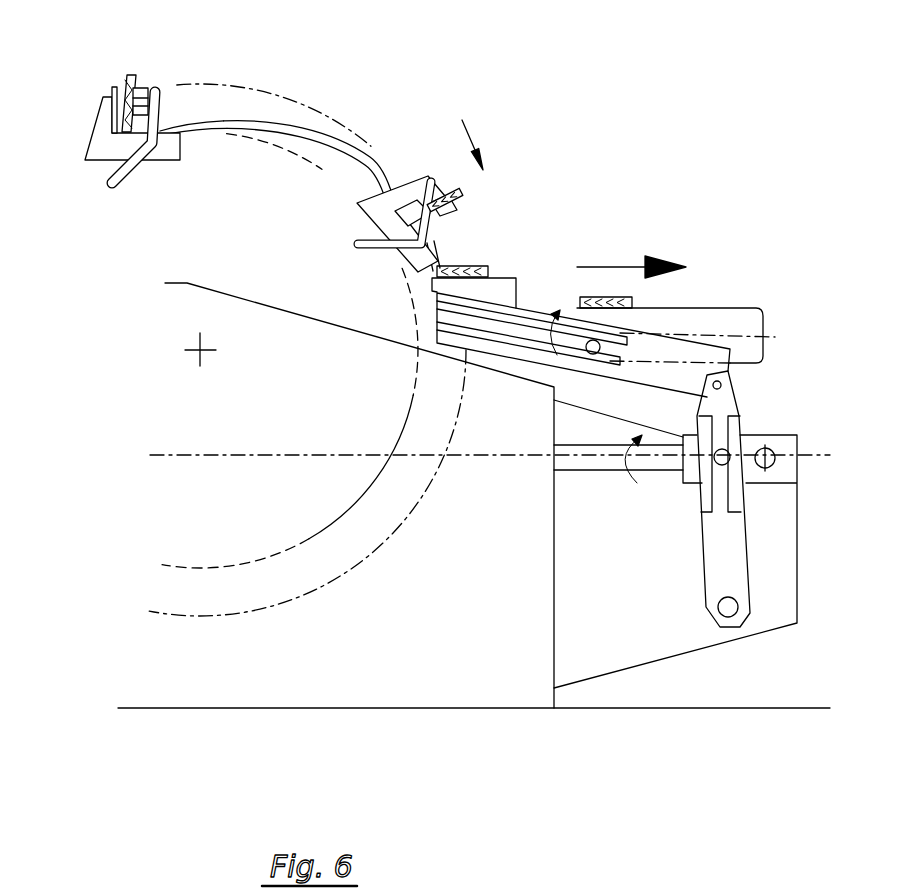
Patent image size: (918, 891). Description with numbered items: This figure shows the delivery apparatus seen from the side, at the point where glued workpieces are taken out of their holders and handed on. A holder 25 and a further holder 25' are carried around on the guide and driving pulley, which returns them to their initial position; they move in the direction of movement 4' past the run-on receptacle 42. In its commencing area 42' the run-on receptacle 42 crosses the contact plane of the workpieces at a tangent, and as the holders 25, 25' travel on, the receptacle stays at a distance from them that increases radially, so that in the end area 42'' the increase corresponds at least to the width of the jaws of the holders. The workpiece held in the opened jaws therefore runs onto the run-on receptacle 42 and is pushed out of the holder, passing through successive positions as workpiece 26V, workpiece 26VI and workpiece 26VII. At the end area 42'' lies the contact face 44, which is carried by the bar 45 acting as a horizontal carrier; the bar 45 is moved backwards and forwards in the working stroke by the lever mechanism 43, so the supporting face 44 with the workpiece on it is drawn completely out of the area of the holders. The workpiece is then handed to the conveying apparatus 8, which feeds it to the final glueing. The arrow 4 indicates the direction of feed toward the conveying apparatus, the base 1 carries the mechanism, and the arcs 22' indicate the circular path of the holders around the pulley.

The machine frame 1 is at (520, 685).
The feed direction arrow 4 is at (631, 250).
The direction of movement 4' is at (475, 142).
The conveying apparatus 8 is at (750, 327).
The turntable wheel 22' is at (307, 356).
The holder 25 is at (132, 96).
The holder 25' is at (372, 224).
The workpiece 26V is at (462, 190).
The workpiece 26VI is at (477, 263).
The workpiece 26VII is at (610, 297).
The run-on receptacle 42 is at (325, 137).
The commencing area of run-on receptacle 42' is at (206, 81).
The end area of run-on receptacle 42'' is at (495, 224).
The lever mechanism 43 is at (636, 330).
The contact face 44 is at (512, 293).
The bar 45 is at (437, 305).